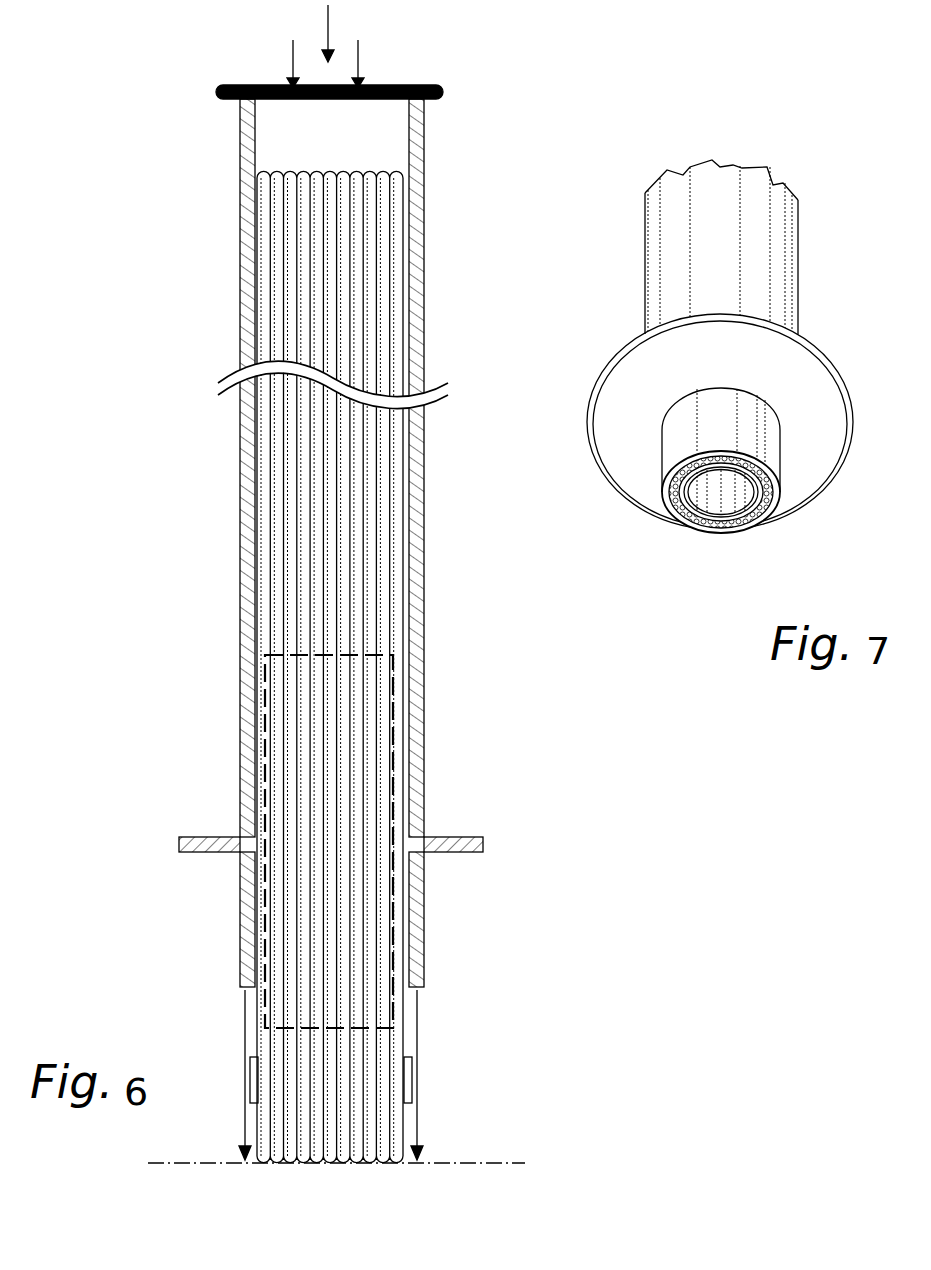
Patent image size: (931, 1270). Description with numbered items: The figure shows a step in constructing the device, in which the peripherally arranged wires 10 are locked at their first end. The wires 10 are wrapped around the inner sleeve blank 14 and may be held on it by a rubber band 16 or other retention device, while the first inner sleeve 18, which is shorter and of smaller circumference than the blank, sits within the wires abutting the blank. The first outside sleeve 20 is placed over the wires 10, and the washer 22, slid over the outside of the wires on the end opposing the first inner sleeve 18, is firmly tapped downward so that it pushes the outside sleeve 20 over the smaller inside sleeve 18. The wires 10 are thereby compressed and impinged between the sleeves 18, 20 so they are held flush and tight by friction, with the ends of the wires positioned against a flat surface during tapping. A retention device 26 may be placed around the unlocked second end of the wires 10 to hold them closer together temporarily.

In FIG. 6, the wires 10 is at (378, 565).
In FIG. 7, the wires 10 is at (760, 523).
In FIG. 6, the inner sleeve blank 14 is at (262, 752).
In FIG. 6, the rubber band 16 is at (414, 1083).
In FIG. 6, the first inner sleeve 18 is at (395, 1130).
In FIG. 7, the first inner sleeve 18 is at (750, 495).
In FIG. 6, the first outside sleeve 20 is at (418, 920).
In FIG. 7, the first outside sleeve 20 is at (690, 432).
In FIG. 6, the washer 22 is at (452, 843).
In FIG. 7, the washer 22 is at (632, 478).
In FIG. 6, the retention device 26 is at (424, 150).